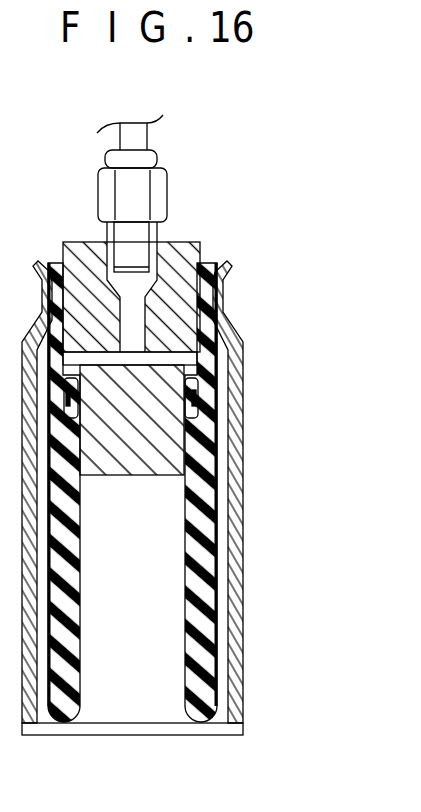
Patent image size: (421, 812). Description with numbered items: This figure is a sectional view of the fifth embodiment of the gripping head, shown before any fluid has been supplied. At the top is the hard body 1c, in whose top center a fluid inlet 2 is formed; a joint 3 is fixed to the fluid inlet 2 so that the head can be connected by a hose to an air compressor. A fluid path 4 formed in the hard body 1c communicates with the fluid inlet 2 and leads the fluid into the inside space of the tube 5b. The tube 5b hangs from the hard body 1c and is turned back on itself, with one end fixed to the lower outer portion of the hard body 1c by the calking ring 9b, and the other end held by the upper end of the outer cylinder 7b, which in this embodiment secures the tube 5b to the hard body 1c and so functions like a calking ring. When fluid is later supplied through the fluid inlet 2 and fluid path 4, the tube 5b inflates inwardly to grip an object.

The joint 3 is at (160, 184).
The fluid inlet 2 is at (146, 256).
The hard body 1c is at (177, 323).
The outer cylinder 7b is at (240, 333).
The fluid path 4 is at (190, 358).
The calking ring 9b is at (192, 402).
The tube 5b is at (210, 465).